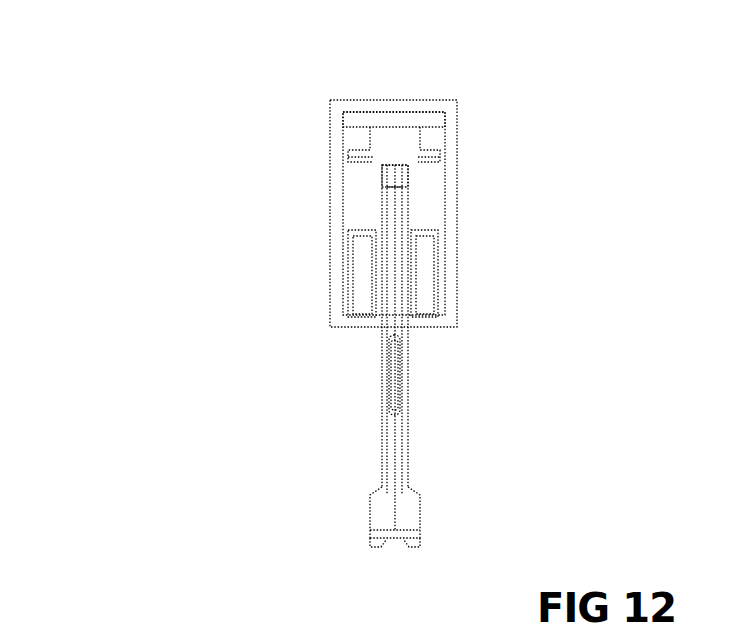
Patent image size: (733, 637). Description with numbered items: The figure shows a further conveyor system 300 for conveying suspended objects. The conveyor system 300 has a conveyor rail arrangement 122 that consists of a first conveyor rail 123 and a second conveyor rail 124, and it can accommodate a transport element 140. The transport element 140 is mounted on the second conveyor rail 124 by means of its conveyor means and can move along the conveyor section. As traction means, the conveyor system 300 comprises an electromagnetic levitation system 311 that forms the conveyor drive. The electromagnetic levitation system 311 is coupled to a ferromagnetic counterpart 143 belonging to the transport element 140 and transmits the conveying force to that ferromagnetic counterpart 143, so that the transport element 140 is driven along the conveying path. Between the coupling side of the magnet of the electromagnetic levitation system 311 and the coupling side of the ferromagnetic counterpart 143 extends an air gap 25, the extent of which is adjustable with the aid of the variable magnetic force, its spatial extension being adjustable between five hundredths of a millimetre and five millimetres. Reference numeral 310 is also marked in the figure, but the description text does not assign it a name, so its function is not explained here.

The conveyor system 300 is at (126, 59).
The electromagnetic levitation system 311 is at (372, 130).
The first conveyor rail 123 is at (441, 137).
The magnet housing 310 is at (437, 165).
The air gap 25 is at (380, 163).
The ferromagnetic counterpart 143 is at (402, 195).
The second conveyor rail 124 is at (440, 292).
The conveyor rail arrangement 122 is at (338, 318).
The transport element 140 is at (402, 343).